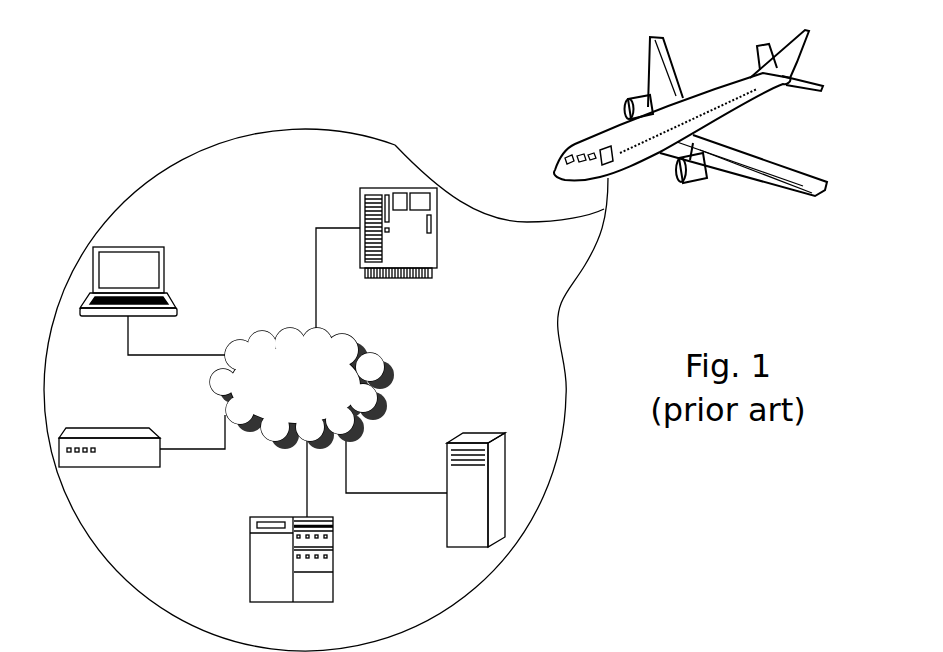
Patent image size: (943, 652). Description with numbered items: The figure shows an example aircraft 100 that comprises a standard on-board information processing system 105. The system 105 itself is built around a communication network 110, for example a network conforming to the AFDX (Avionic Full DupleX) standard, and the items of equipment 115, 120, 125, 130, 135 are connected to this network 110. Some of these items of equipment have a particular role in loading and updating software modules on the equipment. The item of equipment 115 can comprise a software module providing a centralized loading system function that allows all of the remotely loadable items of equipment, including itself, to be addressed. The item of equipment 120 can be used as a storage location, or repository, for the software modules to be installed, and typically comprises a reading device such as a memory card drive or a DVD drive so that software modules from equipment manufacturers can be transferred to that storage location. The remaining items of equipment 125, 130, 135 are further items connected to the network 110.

The aircraft 100 is at (748, 102).
The on-board information processing system 105 is at (562, 335).
The communication network 110 is at (277, 388).
The item of equipment 115 is at (165, 270).
The item of equipment 120 is at (62, 428).
The item of equipment 125 is at (437, 256).
The item of equipment 130 is at (447, 517).
The item of equipment 135 is at (333, 580).